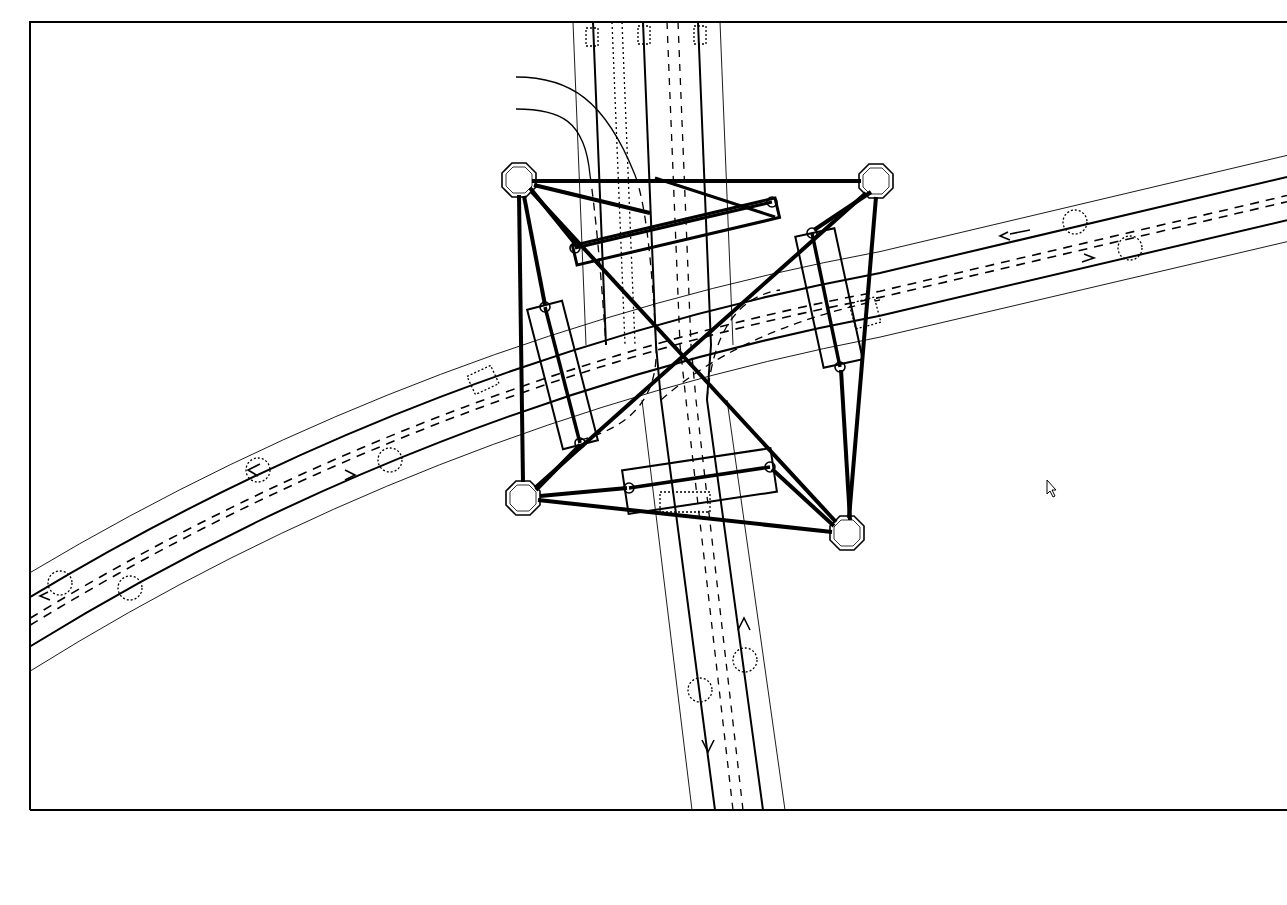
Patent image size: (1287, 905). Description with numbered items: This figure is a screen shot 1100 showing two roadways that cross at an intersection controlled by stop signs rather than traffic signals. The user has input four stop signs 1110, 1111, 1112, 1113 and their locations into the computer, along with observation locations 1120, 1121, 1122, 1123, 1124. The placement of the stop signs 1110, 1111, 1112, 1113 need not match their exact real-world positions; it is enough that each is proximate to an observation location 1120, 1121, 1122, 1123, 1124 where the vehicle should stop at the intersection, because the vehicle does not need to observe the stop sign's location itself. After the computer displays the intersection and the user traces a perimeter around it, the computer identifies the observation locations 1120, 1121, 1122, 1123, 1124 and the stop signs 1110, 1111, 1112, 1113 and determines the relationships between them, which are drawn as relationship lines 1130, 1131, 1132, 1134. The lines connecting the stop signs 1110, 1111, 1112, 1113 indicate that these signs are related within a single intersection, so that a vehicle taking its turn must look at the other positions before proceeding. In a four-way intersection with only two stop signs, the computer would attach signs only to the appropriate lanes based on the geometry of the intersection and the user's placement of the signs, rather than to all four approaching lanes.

The screen shot 1100 is at (553, 864).
The stop sign 1110 is at (875, 162).
The stop sign 1111 is at (864, 538).
The stop sign 1112 is at (506, 517).
The stop sign 1113 is at (502, 182).
The observation location 1120 is at (875, 294).
The observation location 1121 is at (766, 529).
The observation location 1122 is at (522, 418).
The observation location 1123 is at (578, 264).
The observation location 1124 is at (559, 202).
The relationship line 1130 is at (870, 242).
The relationship line 1131 is at (797, 515).
The relationship line 1132 is at (598, 235).
The relationship line 1134 is at (534, 219).